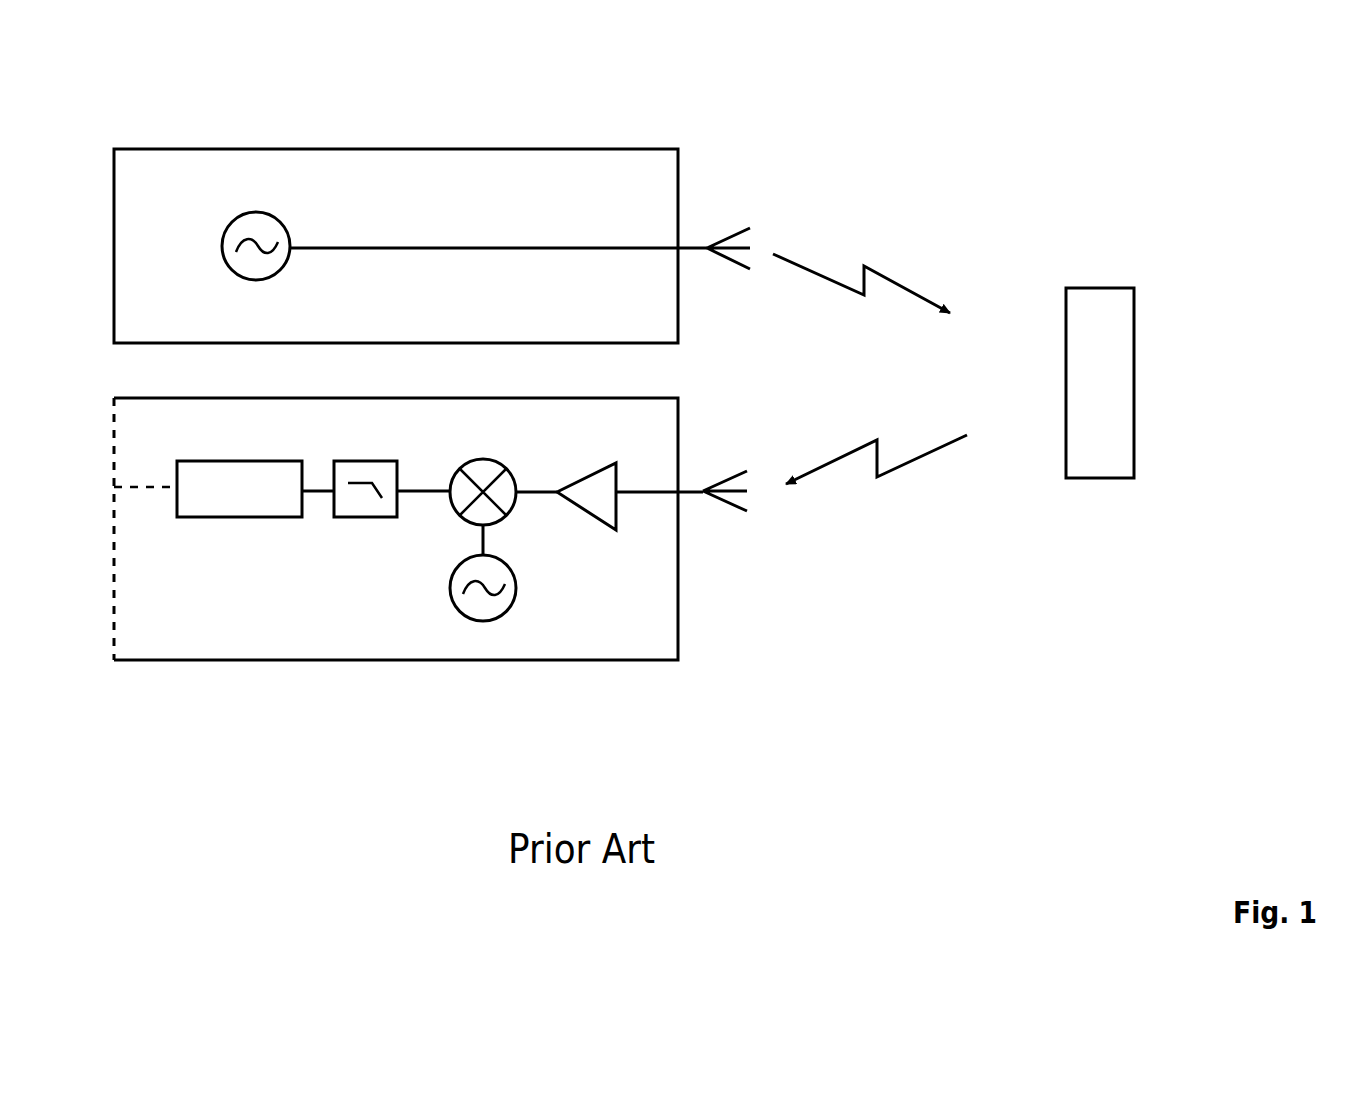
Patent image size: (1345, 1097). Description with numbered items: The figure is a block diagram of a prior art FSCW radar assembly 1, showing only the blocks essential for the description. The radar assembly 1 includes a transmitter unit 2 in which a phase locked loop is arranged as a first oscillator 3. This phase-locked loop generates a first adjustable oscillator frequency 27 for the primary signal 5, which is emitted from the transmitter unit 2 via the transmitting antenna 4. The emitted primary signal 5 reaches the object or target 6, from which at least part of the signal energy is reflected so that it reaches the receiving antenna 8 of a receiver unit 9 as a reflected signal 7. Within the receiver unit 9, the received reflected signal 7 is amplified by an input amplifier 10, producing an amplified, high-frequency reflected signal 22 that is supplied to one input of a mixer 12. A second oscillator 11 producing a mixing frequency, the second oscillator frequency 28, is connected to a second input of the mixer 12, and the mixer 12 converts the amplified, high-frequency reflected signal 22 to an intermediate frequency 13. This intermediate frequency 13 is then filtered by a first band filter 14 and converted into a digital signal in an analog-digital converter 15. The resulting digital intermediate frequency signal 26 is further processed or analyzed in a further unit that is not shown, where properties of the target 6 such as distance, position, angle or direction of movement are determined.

The radar assembly 1 is at (86, 145).
The transmitter unit 2 is at (181, 207).
The first oscillator 3 is at (266, 233).
The first adjustable oscillator frequency 27 is at (615, 245).
The transmitting antenna 4 is at (723, 230).
The primary signal 5 is at (897, 268).
The object or target 6 is at (1083, 313).
The receiver unit 9 is at (142, 414).
The digital intermediate frequency signal 26 is at (142, 487).
The analog-digital converter 15 is at (233, 485).
The first band filter 14 is at (360, 497).
The intermediate frequency 13 is at (423, 490).
The mixer 12 is at (460, 493).
The second oscillator frequency 28 is at (485, 538).
The second oscillator 11 is at (473, 597).
The amplified, high-frequency reflected signal 22 is at (538, 490).
The input amplifier 10 is at (593, 495).
The receiving antenna 8 is at (722, 517).
The reflected signal 7 is at (843, 488).